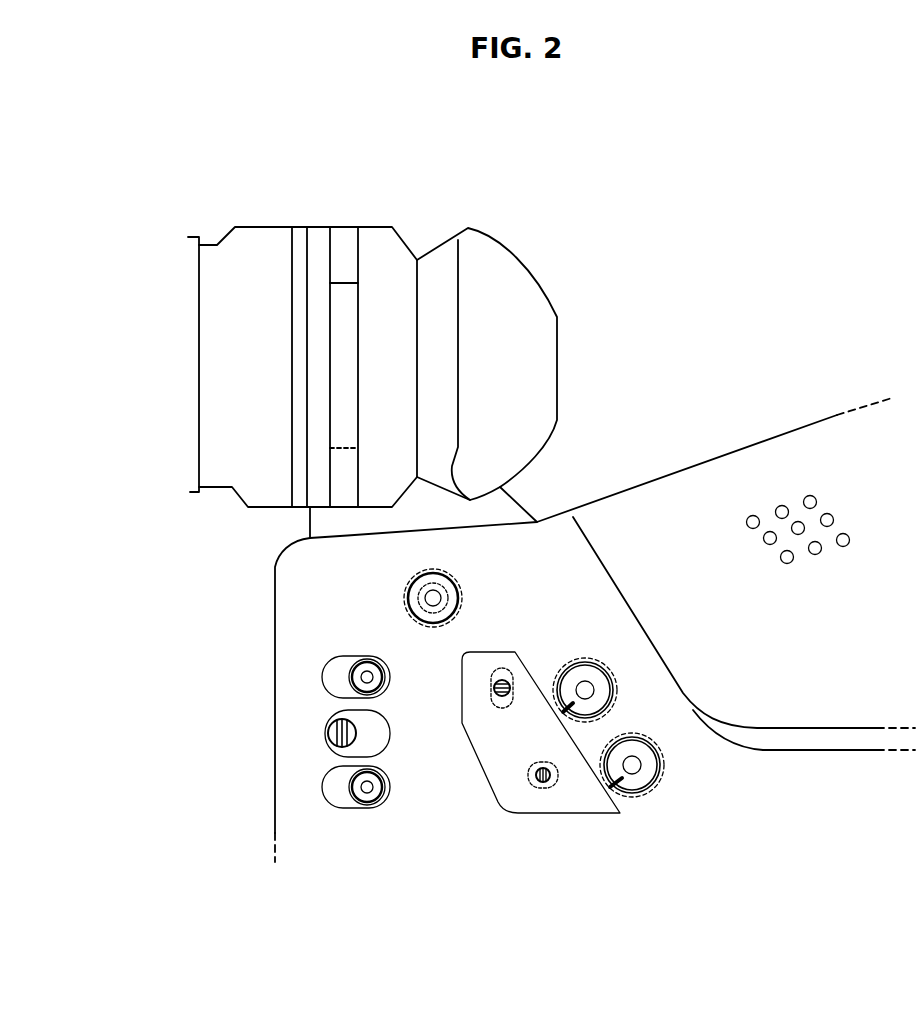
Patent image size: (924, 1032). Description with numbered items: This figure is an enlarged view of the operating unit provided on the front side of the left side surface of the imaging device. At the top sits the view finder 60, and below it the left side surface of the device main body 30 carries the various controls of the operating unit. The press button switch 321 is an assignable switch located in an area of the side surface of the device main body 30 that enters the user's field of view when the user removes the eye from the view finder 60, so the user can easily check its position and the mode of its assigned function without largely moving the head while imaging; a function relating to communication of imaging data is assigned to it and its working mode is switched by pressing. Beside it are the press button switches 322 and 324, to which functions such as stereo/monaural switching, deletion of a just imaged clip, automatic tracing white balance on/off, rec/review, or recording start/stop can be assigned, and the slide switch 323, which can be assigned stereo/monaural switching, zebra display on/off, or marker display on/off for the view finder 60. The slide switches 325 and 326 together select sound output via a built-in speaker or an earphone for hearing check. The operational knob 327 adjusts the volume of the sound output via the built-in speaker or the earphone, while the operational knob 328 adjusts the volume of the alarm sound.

The view finder 60 is at (320, 216).
The device main body 30 is at (740, 445).
The press button switch 321 is at (421, 579).
The press button switch 322 is at (351, 674).
The slide switch 323 is at (328, 733).
The press button switch 324 is at (352, 784).
The slide switch 325 is at (497, 703).
The slide switch 326 is at (545, 789).
The operational knob 327 is at (632, 800).
The operational knob 328 is at (614, 696).